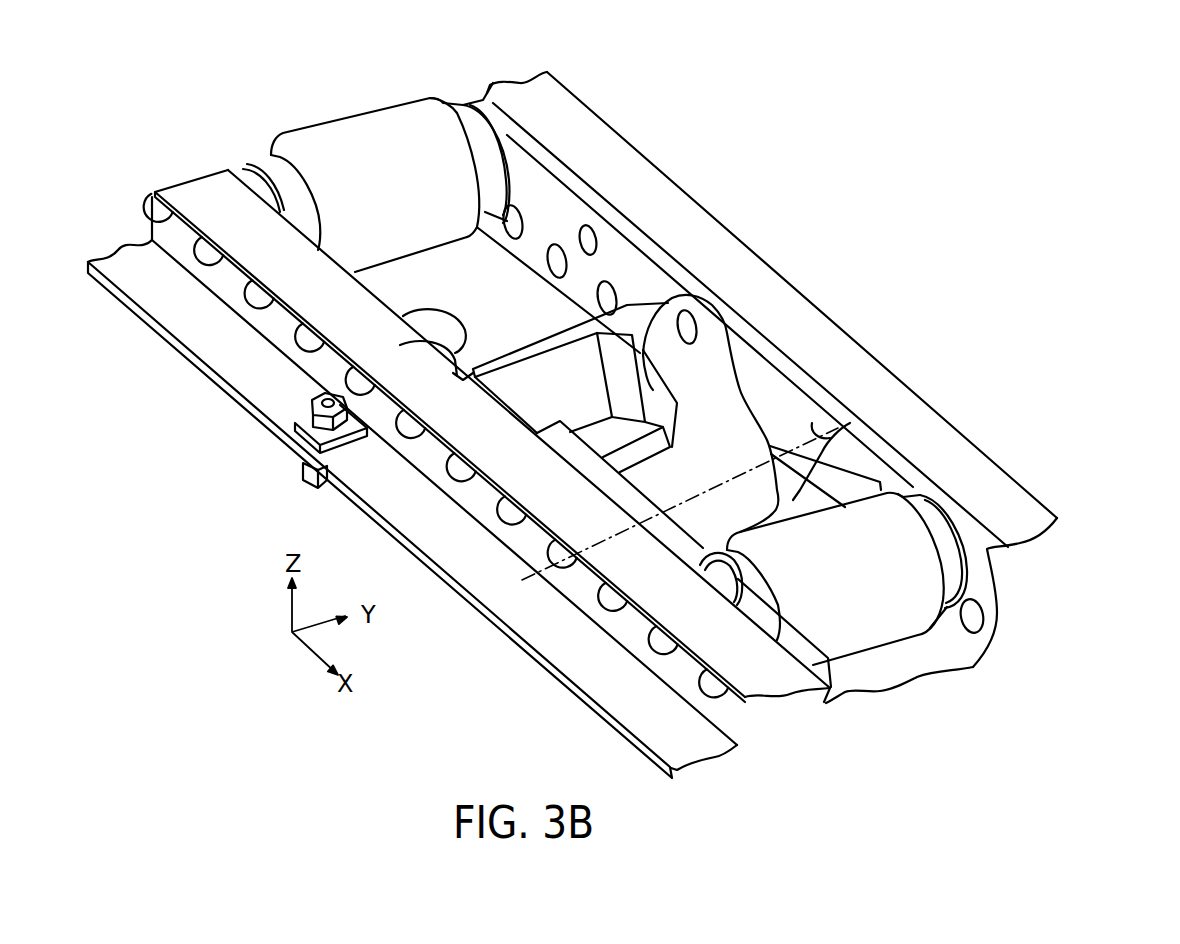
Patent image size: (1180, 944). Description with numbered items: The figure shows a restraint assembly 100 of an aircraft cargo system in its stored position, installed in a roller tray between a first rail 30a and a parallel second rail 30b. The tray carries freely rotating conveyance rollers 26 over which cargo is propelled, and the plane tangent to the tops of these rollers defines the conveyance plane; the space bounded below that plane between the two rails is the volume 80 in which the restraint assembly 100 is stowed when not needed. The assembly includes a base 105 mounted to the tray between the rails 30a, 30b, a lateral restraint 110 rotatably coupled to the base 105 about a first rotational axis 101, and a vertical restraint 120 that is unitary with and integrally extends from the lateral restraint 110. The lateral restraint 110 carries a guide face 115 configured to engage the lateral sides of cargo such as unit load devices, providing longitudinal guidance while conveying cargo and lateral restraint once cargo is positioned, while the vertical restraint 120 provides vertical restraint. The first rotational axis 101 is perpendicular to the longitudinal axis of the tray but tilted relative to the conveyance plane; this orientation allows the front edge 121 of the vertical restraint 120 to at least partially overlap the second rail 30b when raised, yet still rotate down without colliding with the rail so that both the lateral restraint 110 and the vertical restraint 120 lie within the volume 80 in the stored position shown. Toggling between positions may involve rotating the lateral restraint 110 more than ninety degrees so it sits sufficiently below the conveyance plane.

The conveyance rollers 26 is at (390, 144).
The first rail 30a is at (1017, 487).
The second rail 30b is at (760, 677).
The volume 80 is at (545, 203).
The restraint assembly 100 is at (780, 384).
The first rotational axis 101 is at (837, 437).
The base 105 is at (848, 432).
The lateral restraint 110 is at (759, 298).
The guide face 115 is at (690, 305).
The vertical restraint 120 is at (560, 333).
The front edge 121 is at (435, 343).